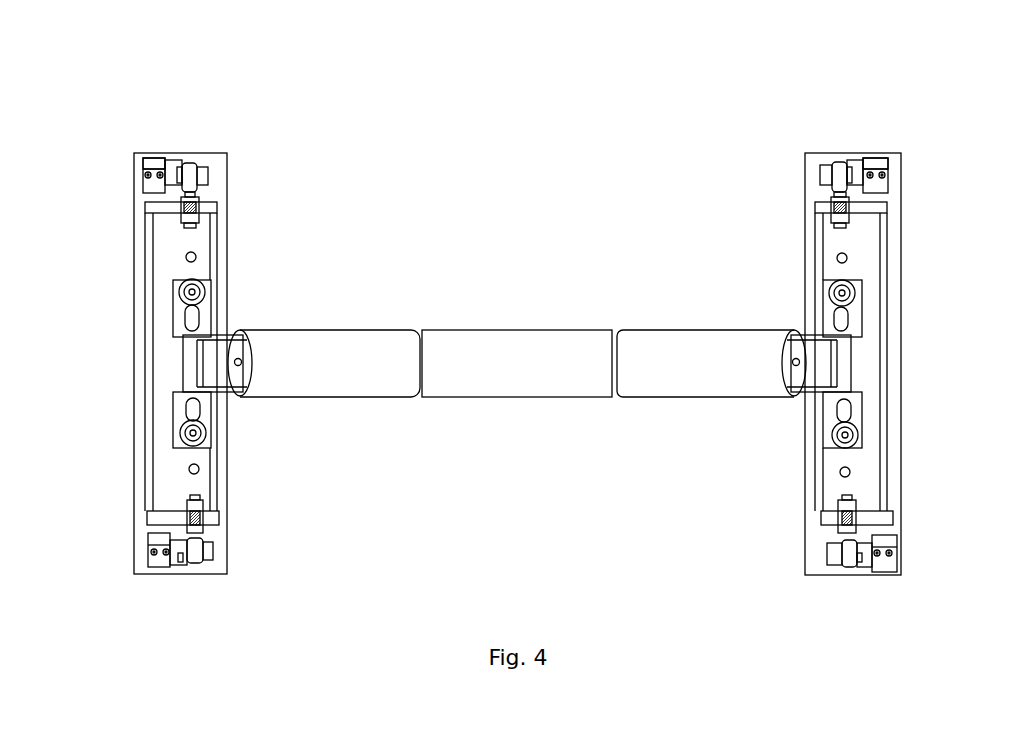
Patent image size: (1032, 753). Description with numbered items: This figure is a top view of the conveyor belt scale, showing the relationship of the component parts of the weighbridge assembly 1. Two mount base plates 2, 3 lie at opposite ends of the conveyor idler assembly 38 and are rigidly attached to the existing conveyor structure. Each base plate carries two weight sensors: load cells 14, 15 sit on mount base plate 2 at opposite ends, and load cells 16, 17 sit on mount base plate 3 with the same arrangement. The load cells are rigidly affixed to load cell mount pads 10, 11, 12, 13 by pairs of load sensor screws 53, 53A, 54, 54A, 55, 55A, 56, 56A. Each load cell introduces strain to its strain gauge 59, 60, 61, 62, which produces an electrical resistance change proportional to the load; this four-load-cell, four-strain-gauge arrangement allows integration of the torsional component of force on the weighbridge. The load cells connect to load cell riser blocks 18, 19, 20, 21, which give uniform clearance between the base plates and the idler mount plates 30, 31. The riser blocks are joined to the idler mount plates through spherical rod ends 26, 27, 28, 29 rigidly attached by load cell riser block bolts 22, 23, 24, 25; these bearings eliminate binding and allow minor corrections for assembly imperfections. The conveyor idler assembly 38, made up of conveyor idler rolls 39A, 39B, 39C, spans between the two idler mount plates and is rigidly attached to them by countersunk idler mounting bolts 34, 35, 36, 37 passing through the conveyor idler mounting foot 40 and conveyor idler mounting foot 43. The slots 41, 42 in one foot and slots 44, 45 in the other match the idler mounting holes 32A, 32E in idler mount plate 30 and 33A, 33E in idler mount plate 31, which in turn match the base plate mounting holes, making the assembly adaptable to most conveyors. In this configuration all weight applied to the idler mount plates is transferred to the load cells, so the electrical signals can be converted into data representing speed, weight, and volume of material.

The weighbridge assembly 1 is at (568, 98).
The mount base plate 2 is at (143, 523).
The mount base plate 3 is at (900, 527).
The load cell mount pad 10 is at (153, 563).
The load cell mount pad 11 is at (155, 168).
The load cell mount pad 12 is at (892, 563).
The load cell mount pad 13 is at (887, 162).
The load cell 14 is at (162, 557).
The load cell 15 is at (147, 162).
The load cell 16 is at (882, 562).
The load cell 17 is at (877, 167).
The load cell riser block 18 is at (212, 553).
The load cell riser block 19 is at (203, 173).
The load cell riser block 20 is at (835, 558).
The load cell riser block 21 is at (823, 173).
The load cell riser block bolt 22 is at (193, 562).
The load cell riser block bolt 23 is at (182, 168).
The load cell riser block bolt 24 is at (857, 562).
The load cell riser block bolt 25 is at (845, 170).
The spherical rod end 26 is at (197, 557).
The spherical rod end 27 is at (192, 173).
The spherical rod end 28 is at (848, 553).
The spherical rod end 29 is at (836, 172).
The idler mount plate 30 is at (152, 370).
The idler mount plate 31 is at (887, 370).
The idler mounting hole 32A is at (198, 473).
The idler mounting hole 32E is at (195, 255).
The idler mounting hole 33A is at (845, 472).
The idler mounting hole 33E is at (838, 253).
The idler mounting bolt 34 is at (200, 435).
The idler mounting bolt 35 is at (198, 292).
The idler mounting bolt 36 is at (845, 437).
The idler mounting bolt 37 is at (836, 290).
The conveyor idler assembly 38 is at (517, 363).
The conveyor idler roll A 39A is at (328, 358).
The conveyor idler roll B 39B is at (512, 347).
The conveyor idler roll C 39C is at (722, 362).
The conveyor idler mounting foot 40 is at (207, 400).
The conveyor idler mounting foot slot 41 is at (193, 410).
The conveyor idler mounting foot slot 42 is at (195, 313).
The conveyor idler mounting foot 43 is at (828, 402).
The conveyor idler mounting foot slot 44 is at (843, 413).
The conveyor idler mounting foot slot 45 is at (838, 313).
The load sensor screw 53 is at (150, 557).
The load sensor screw 53A is at (153, 552).
The load sensor screw 54 is at (147, 173).
The load sensor screw 54A is at (162, 173).
The load sensor screw 55 is at (895, 557).
The load sensor screw 55A is at (892, 550).
The load sensor screw 56 is at (887, 173).
The load sensor screw 56A is at (872, 177).
The strain gauge 59 is at (180, 558).
The strain gauge 60 is at (175, 168).
The strain gauge 61 is at (865, 558).
The strain gauge 62 is at (858, 167).